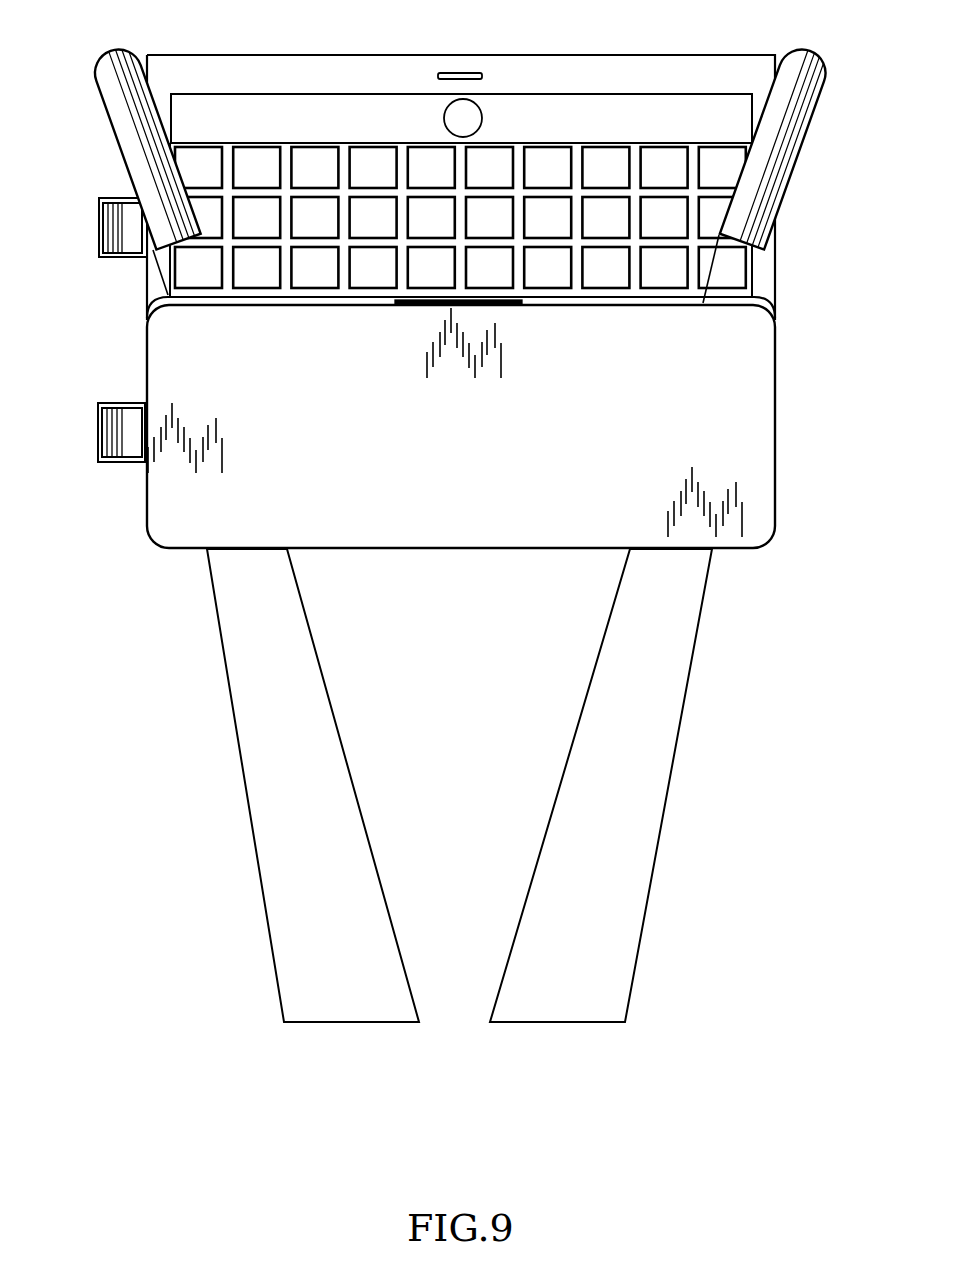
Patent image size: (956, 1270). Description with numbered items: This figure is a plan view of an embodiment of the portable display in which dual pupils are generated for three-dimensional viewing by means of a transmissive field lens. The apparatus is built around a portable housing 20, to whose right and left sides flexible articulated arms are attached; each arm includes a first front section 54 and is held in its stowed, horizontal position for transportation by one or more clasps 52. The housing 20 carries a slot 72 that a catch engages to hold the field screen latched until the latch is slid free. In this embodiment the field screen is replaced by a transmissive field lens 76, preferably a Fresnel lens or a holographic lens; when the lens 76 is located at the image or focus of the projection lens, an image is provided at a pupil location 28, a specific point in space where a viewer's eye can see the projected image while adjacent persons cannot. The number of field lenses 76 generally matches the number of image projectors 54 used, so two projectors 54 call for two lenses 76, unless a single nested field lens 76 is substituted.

The portable housing 20 is at (773, 465).
The pupil 28 is at (353, 1024).
The clasp 52 is at (99, 232).
The first front section 54 is at (98, 128).
The slot 72 is at (468, 72).
The transmissive field lens 76 is at (177, 367).